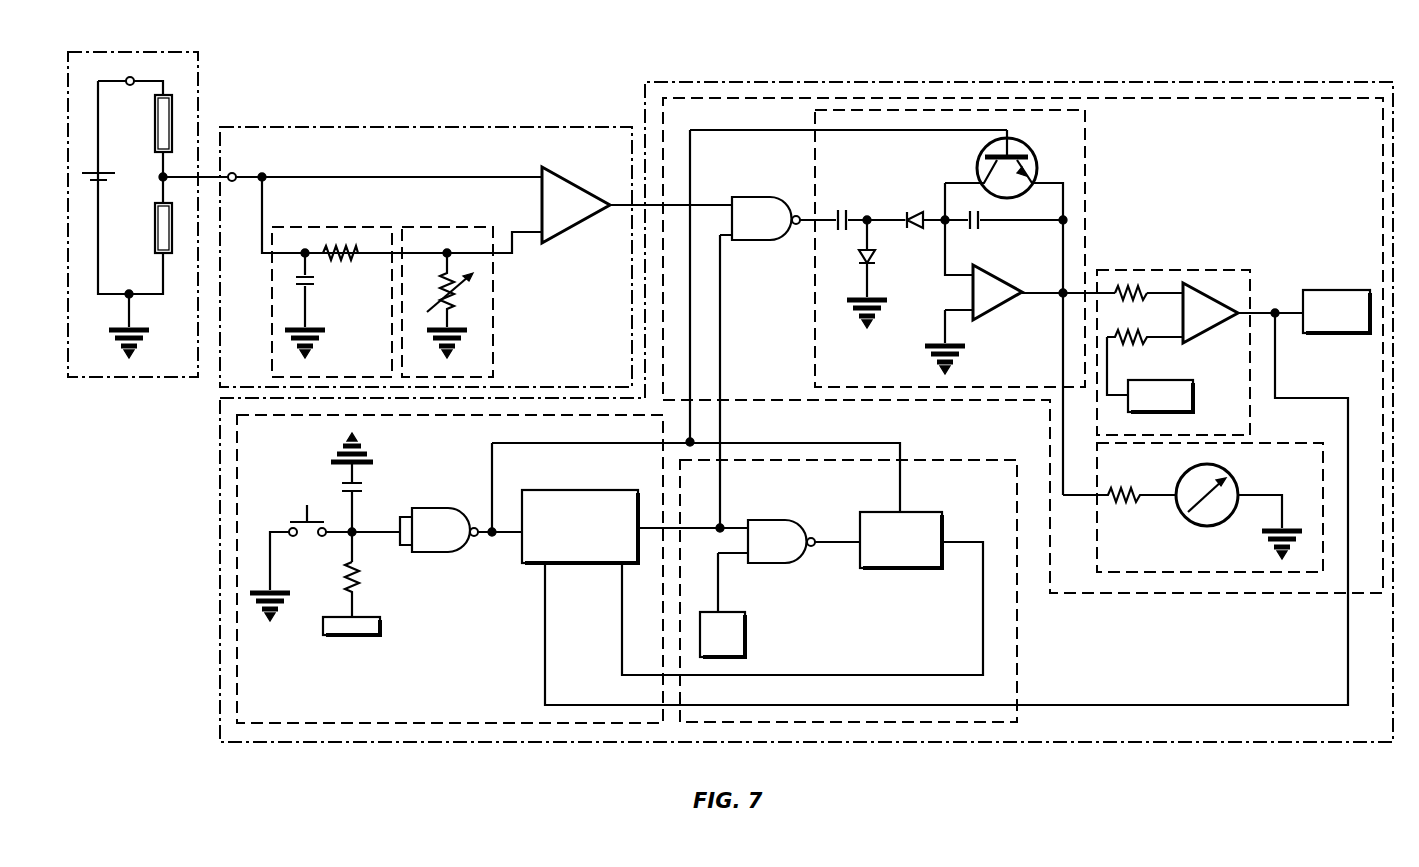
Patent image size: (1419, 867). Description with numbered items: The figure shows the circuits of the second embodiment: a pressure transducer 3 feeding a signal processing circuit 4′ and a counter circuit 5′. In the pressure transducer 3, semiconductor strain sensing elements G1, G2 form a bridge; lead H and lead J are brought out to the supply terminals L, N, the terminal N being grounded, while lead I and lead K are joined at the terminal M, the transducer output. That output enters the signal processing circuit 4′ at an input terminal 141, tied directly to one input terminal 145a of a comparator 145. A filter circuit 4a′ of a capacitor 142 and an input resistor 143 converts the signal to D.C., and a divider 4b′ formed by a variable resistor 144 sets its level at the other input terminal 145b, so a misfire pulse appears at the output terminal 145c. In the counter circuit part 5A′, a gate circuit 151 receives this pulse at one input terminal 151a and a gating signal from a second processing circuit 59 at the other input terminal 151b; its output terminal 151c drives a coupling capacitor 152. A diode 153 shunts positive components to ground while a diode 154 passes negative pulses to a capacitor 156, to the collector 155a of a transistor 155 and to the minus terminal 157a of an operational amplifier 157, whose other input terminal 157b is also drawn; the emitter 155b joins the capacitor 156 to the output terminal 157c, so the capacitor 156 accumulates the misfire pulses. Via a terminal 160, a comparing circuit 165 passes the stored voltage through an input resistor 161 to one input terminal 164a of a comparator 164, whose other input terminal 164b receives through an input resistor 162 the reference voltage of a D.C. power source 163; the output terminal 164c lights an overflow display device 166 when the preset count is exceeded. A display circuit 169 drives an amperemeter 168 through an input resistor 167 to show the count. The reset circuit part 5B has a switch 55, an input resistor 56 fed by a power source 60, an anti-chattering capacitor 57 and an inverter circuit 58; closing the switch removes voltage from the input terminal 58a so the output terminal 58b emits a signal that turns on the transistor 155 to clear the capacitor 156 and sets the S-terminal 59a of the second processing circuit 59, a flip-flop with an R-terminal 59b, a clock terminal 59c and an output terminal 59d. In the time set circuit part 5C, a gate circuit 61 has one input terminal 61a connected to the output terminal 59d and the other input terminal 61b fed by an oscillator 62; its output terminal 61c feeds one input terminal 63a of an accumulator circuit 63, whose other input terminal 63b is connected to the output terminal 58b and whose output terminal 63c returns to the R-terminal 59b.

The pressure transducer 3 is at (148, 62).
The terminal L is at (128, 77).
The lead H is at (165, 86).
The semiconductor strain sensing element G1 is at (155, 124).
The semiconductor strain sensing element G2 is at (155, 232).
The lead I is at (165, 157).
The terminal M is at (160, 177).
The lead K is at (165, 200).
The terminal N is at (129, 290).
The lead J is at (165, 270).
The input terminal 141 is at (232, 173).
The signal processing circuit 4′ is at (472, 130).
The filter circuit 4a′ is at (298, 228).
The divider 4b′ is at (495, 299).
The capacitor 142 is at (313, 283).
The input resistor 143 is at (345, 260).
The variable resistor 144 is at (437, 303).
The comparator 145 is at (578, 193).
The input terminal 145a is at (522, 175).
The input terminal 145b is at (520, 230).
The output terminal 145c is at (612, 212).
The counter circuit 5′ is at (1204, 88).
The counter circuit part 5A′ is at (1085, 130).
The reset circuit part 5B is at (237, 576).
The time set circuit part 5C is at (1017, 640).
The gate circuit 151 is at (782, 202).
The input terminal 151a is at (720, 202).
The input terminal 151b is at (724, 245).
The output terminal 151c is at (800, 226).
The coupling capacitor 152 is at (838, 208).
The diode 153 is at (858, 257).
The diode 154 is at (912, 210).
The transistor 155 is at (1042, 140).
The collector 155a is at (975, 183).
The emitter 155b is at (1064, 170).
The capacitor 156 is at (979, 226).
The operational amplifier 157 is at (996, 276).
The minus terminal 157a is at (960, 276).
The amplifier input 157b is at (960, 310).
The output terminal 157c is at (1028, 300).
The terminal 160 is at (1068, 290).
The input resistor 161 is at (1137, 284).
The input resistor 162 is at (1146, 348).
The D.C. power source 163 is at (1193, 400).
The comparator 164 is at (1224, 306).
The input terminal 164a is at (1176, 290).
The input terminal 164b is at (1170, 342).
The output terminal 164c is at (1238, 320).
The comparing circuit 165 is at (1254, 296).
The overflow display device 166 is at (1352, 290).
The input resistor 167 is at (1138, 504).
The amperemeter 168 is at (1230, 478).
The display circuit 169 is at (1178, 572).
The switch 55 is at (292, 528).
The input resistor 56 is at (346, 582).
The capacitor 57 is at (342, 486).
The inverter circuit 58 is at (452, 512).
The input terminal 58a is at (400, 518).
The output terminal 58b is at (477, 542).
The second processing circuit 59 is at (586, 492).
The S-terminal 59a is at (512, 526).
The R-terminal 59b is at (545, 594).
The clock terminal 59c is at (622, 612).
The output terminal 59d is at (644, 545).
The power source 60 is at (385, 612).
The gate circuit 61 is at (794, 522).
The input terminal 61a is at (740, 522).
The input terminal 61b is at (745, 552).
The output terminal 61c is at (818, 546).
The oscillator 62 is at (745, 634).
The accumulator circuit 63 is at (912, 572).
The input terminal 63a is at (850, 540).
The input terminal 63b is at (902, 500).
The output terminal 63c is at (960, 542).